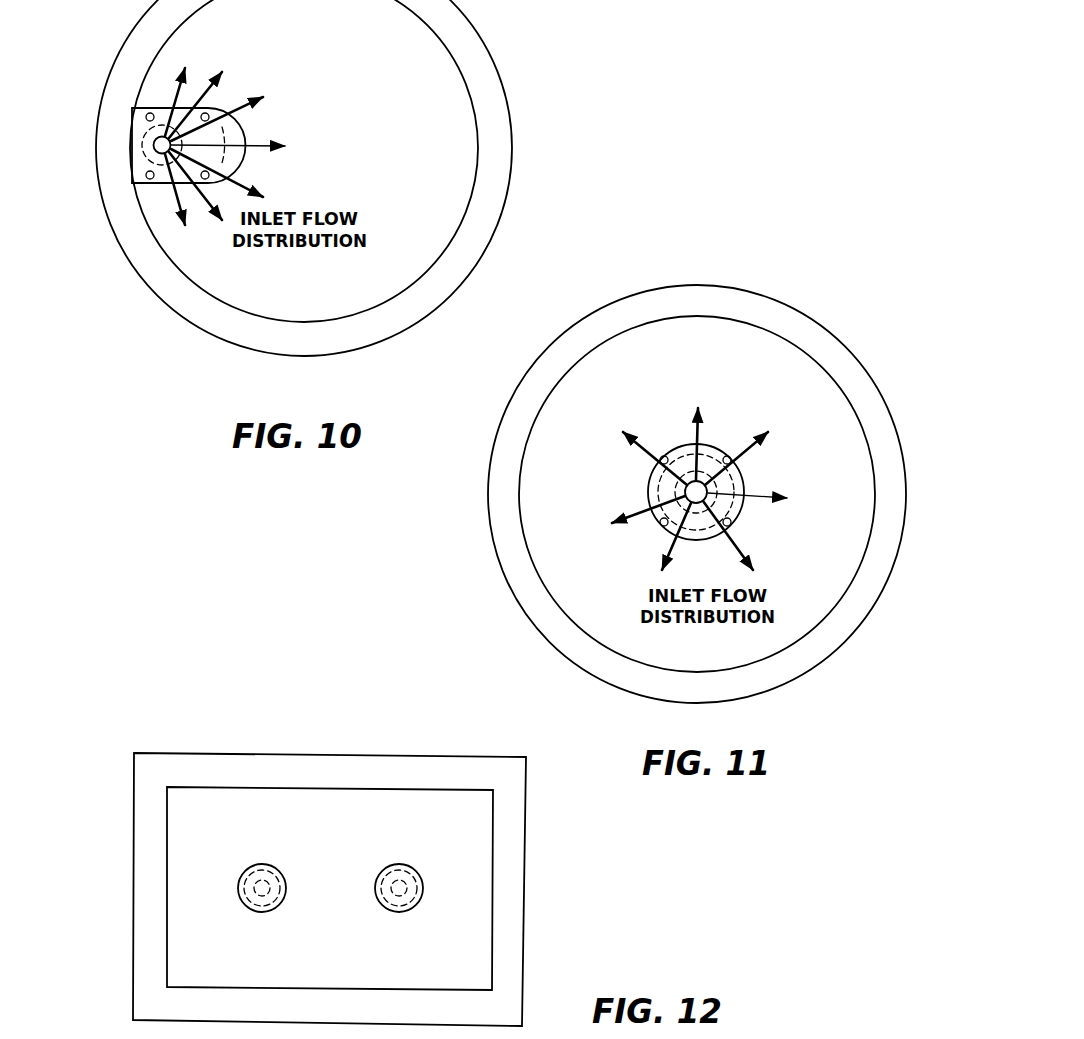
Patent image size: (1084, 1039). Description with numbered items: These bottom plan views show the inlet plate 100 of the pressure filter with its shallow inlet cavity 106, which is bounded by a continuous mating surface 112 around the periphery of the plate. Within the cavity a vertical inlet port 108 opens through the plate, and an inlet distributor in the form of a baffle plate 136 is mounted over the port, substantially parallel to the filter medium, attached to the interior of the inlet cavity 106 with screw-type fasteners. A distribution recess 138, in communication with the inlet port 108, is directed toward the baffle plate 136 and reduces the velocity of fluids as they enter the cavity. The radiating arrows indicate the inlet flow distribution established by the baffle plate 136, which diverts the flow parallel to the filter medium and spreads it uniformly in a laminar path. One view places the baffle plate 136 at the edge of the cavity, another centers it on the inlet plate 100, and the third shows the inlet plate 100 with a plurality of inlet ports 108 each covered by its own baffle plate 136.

In FIG. 10, the inlet plate 100 is at (198, 325).
In FIG. 11, the inlet plate 100 is at (528, 618).
In FIG. 12, the inlet plate 100 is at (278, 753).
In FIG. 10, the shallow inlet cavity 106 is at (321, 303).
In FIG. 11, the shallow inlet cavity 106 is at (715, 657).
In FIG. 12, the shallow inlet cavity 106 is at (276, 976).
In FIG. 10, the inlet port 108 is at (145, 136).
In FIG. 11, the inlet port 108 is at (684, 488).
In FIG. 12, the inlet port 108 is at (253, 899).
In FIG. 10, the continuous mating surface 112 is at (162, 273).
In FIG. 11, the continuous mating surface 112 is at (522, 551).
In FIG. 12, the continuous mating surface 112 is at (232, 772).
In FIG. 10, the baffle plate 136 is at (244, 163).
In FIG. 11, the baffle plate 136 is at (741, 513).
In FIG. 12, the baffle plate 136 is at (286, 892).
In FIG. 10, the distribution recess 138 is at (222, 127).
In FIG. 11, the distribution recess 138 is at (737, 477).
In FIG. 12, the distribution recess 138 is at (274, 867).